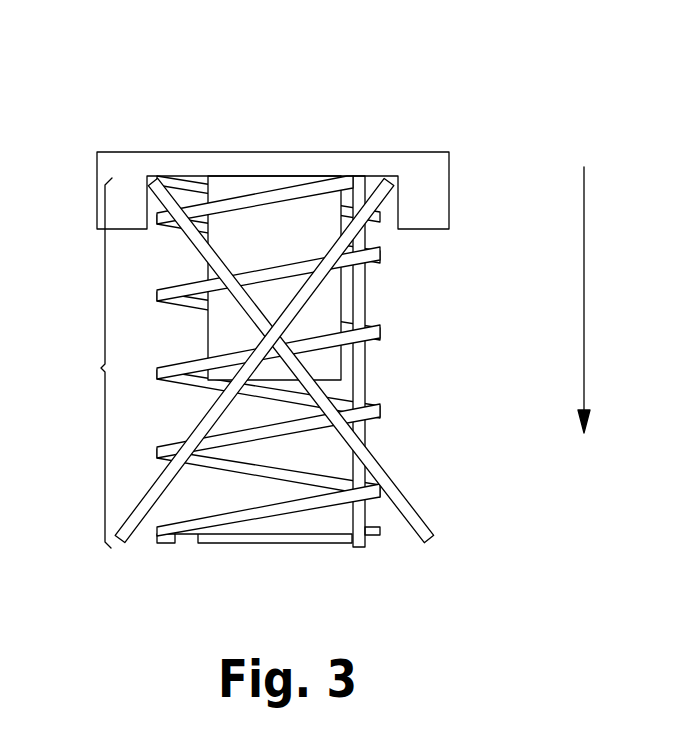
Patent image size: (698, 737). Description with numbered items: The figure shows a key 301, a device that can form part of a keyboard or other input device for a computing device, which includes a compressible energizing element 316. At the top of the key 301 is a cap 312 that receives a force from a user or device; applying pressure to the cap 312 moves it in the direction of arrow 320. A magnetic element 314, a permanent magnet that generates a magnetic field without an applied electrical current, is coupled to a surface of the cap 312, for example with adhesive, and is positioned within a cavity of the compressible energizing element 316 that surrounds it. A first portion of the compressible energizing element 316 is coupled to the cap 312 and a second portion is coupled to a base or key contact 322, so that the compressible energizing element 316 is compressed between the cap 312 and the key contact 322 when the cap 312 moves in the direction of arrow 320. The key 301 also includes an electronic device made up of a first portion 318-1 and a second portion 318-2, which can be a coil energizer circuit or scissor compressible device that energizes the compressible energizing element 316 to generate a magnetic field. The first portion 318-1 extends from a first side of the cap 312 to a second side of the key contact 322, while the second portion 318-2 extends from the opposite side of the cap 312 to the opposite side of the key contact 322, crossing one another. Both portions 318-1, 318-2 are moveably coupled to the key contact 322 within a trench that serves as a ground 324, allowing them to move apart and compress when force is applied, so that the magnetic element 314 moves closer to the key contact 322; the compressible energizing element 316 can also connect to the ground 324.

The key 301 is at (364, 319).
The cap 312 is at (450, 195).
The magnetic element 314 is at (356, 302).
The compressible energizing element 316 is at (85, 363).
The first portion of the electronic device 318-1 is at (411, 503).
The second portion of the electronic device 318-2 is at (123, 550).
The arrow 320 is at (586, 290).
The key contact 322 is at (272, 548).
The ground 324 is at (163, 545).